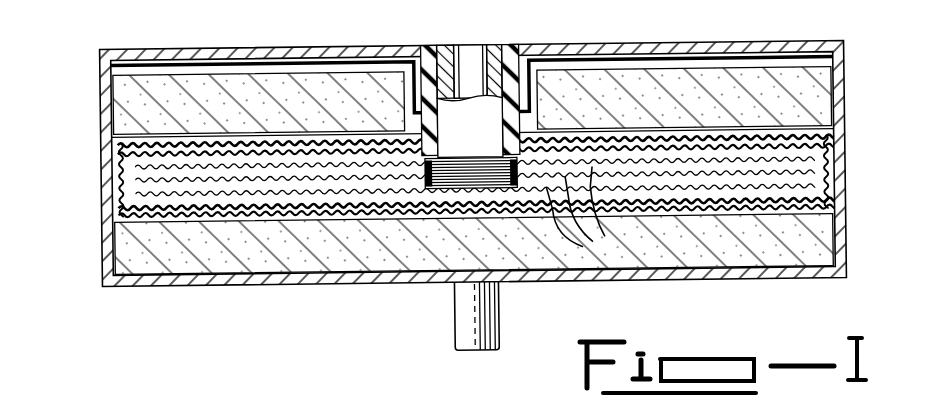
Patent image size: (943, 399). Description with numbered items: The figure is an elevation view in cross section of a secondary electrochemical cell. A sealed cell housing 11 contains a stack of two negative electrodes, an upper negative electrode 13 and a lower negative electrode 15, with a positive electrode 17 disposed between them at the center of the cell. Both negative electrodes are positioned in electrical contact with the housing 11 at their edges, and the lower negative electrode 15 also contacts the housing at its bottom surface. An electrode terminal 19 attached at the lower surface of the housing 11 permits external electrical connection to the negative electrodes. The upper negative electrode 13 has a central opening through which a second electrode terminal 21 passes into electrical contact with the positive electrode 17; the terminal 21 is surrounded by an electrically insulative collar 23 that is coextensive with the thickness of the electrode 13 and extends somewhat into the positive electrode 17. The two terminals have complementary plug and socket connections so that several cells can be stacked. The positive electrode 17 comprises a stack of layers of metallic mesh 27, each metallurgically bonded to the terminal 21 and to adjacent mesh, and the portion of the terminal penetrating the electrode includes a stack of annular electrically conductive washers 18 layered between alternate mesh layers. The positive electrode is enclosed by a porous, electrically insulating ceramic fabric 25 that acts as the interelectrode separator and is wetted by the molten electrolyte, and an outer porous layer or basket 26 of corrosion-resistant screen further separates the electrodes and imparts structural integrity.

The sealed cell housing 11 is at (104, 77).
The upper negative electrode 13 is at (285, 110).
The lower negative electrode 15 is at (295, 250).
The positive electrode 17 is at (118, 185).
The electrically conductive washers 18 is at (493, 160).
The electrode terminal 19 is at (464, 316).
The second electrode terminal 21 is at (444, 51).
The electrically insulative collar 23 is at (512, 54).
The ceramic fabric 25 is at (620, 151).
The outer porous layer or basket 26 is at (822, 142).
The metallic mesh 27 is at (592, 211).